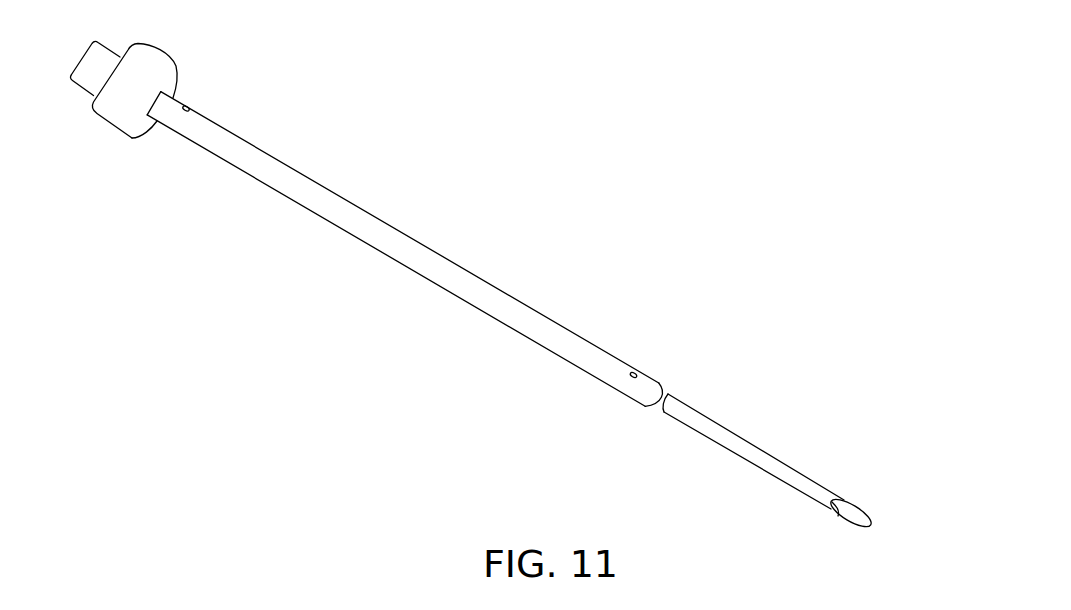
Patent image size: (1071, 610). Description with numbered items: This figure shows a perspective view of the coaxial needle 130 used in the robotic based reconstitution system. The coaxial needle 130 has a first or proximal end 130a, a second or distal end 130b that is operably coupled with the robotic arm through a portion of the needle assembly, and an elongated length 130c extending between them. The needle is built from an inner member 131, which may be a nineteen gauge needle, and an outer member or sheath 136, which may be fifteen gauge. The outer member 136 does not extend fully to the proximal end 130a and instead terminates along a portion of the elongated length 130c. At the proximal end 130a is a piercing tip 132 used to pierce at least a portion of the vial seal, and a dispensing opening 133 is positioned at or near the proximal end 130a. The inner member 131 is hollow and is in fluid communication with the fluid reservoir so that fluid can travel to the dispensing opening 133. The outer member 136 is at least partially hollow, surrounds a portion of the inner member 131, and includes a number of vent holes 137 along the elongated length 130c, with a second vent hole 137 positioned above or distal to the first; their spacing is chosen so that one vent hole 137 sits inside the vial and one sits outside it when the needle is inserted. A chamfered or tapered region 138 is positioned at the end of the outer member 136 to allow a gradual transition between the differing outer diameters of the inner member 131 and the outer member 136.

The coaxial needle 130 is at (516, 310).
The proximal end 130a is at (872, 530).
The distal end 130b is at (82, 126).
The elongated length 130c is at (384, 254).
The inner member 131 is at (767, 453).
The piercing tip 132 is at (872, 520).
The dispensing opening 133 is at (847, 514).
The outer member 136 is at (320, 186).
The vent holes 137 is at (190, 106).
The chamfered region 138 is at (670, 400).